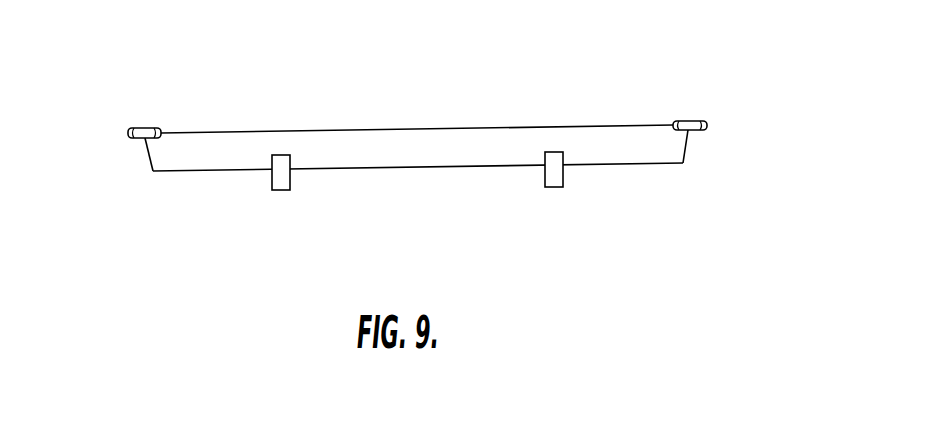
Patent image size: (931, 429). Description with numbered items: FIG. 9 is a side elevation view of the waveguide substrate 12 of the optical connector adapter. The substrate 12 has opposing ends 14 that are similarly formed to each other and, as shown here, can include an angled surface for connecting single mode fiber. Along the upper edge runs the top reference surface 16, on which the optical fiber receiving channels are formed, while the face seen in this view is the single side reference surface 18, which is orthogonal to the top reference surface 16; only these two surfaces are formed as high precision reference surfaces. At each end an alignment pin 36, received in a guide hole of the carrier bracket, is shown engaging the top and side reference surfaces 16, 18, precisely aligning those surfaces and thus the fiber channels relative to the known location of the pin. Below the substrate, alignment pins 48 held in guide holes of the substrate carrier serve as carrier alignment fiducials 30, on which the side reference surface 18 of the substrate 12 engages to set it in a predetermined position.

The substrate 12 is at (432, 154).
The opposing ends 14 is at (147, 160).
The top reference surface 16 is at (620, 124).
The side reference surface 18 is at (608, 153).
The carrier alignment fiducials 30 is at (285, 203).
The alignment pin 36 is at (145, 128).
The alignment pins 48 is at (276, 183).